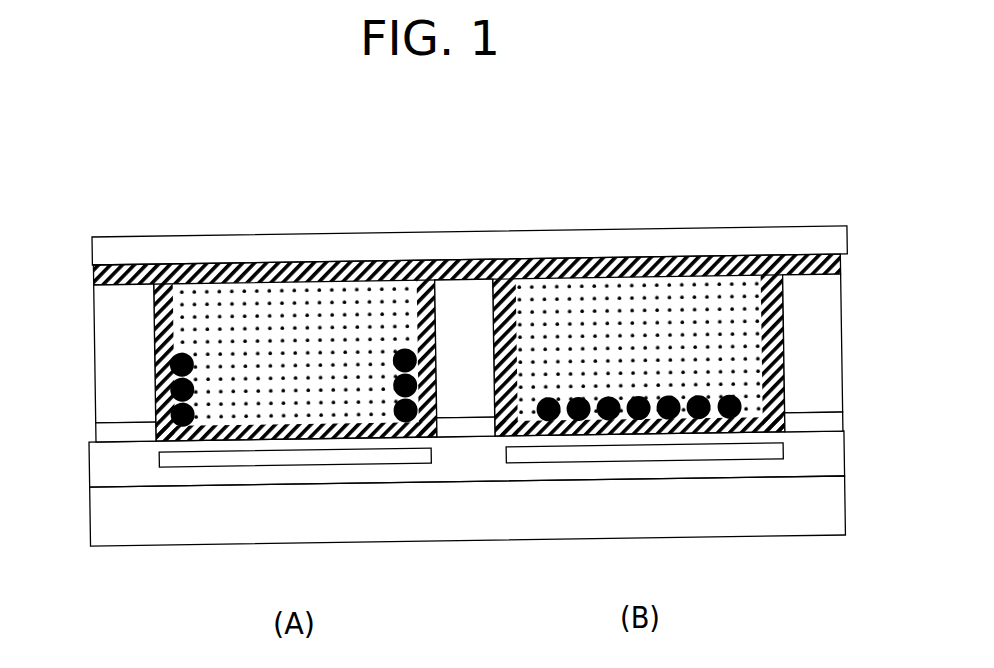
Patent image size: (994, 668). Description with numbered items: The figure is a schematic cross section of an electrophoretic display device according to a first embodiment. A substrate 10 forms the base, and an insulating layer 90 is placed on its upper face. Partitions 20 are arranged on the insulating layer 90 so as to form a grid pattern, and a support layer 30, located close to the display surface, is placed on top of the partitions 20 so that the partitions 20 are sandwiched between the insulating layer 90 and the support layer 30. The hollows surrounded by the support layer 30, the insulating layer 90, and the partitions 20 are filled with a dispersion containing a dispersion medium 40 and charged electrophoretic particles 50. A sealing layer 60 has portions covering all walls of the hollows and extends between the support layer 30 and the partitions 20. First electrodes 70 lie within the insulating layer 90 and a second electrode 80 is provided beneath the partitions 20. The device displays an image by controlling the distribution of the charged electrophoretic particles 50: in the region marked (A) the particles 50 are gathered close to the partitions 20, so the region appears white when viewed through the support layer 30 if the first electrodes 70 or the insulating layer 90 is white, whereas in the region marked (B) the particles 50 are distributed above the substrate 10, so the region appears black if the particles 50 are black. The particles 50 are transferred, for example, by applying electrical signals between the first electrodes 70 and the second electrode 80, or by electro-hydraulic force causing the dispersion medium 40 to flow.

The substrate 10 is at (845, 505).
The partitions 20 is at (94, 342).
The support layer 30 is at (848, 236).
The dispersion medium 40 is at (298, 343).
The charged electrophoretic particles 50 is at (153, 373).
The sealing layer 60 is at (840, 264).
The first electrodes 70 is at (200, 470).
The second electrode 80 is at (94, 435).
The insulating layer 90 is at (845, 455).